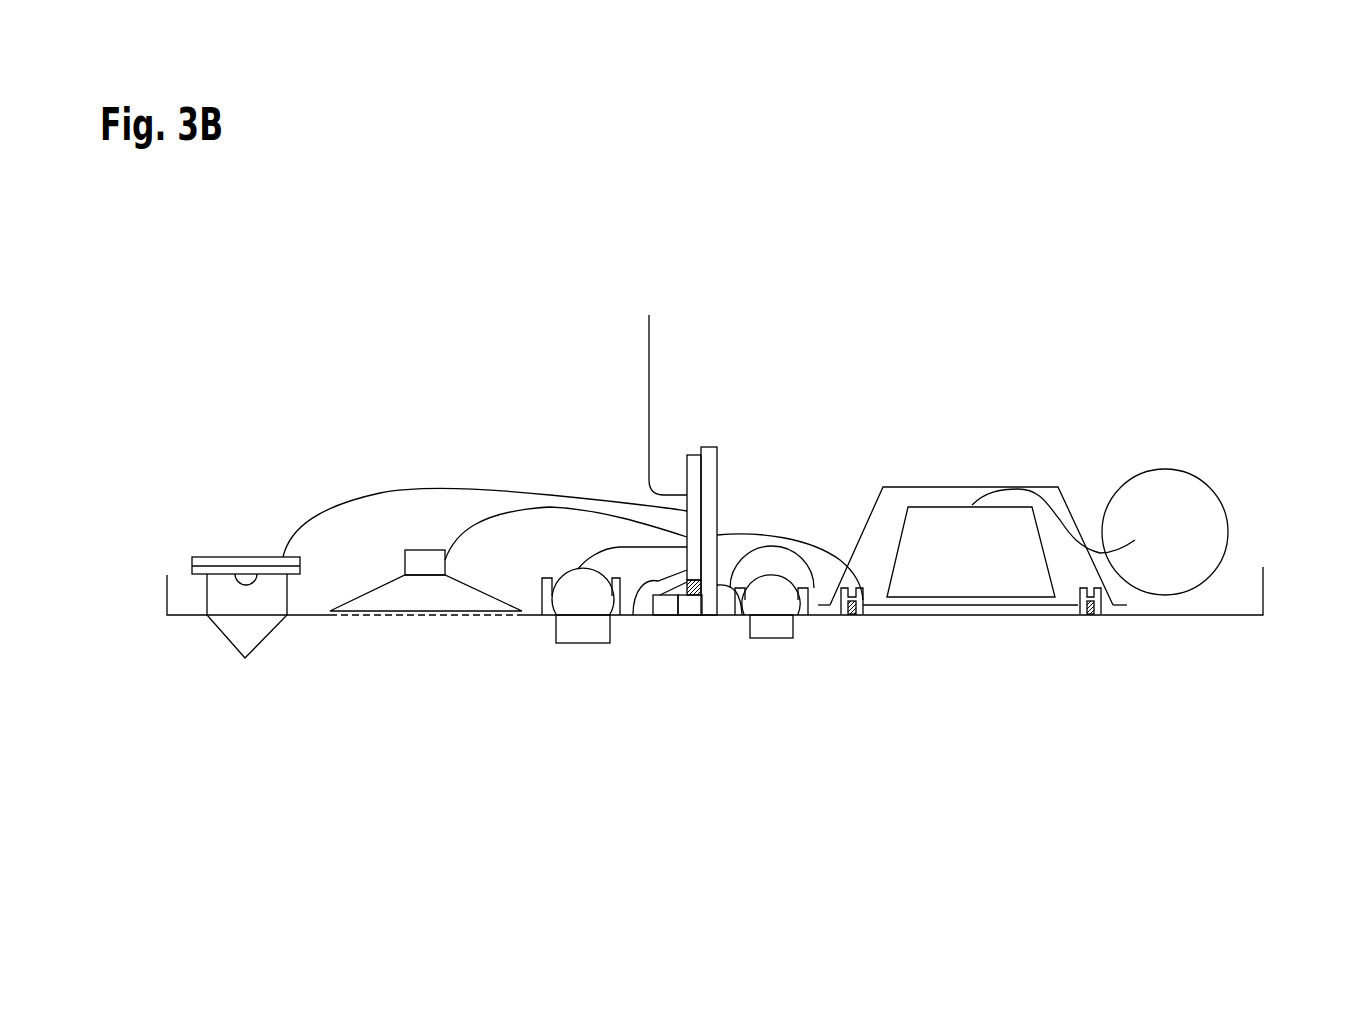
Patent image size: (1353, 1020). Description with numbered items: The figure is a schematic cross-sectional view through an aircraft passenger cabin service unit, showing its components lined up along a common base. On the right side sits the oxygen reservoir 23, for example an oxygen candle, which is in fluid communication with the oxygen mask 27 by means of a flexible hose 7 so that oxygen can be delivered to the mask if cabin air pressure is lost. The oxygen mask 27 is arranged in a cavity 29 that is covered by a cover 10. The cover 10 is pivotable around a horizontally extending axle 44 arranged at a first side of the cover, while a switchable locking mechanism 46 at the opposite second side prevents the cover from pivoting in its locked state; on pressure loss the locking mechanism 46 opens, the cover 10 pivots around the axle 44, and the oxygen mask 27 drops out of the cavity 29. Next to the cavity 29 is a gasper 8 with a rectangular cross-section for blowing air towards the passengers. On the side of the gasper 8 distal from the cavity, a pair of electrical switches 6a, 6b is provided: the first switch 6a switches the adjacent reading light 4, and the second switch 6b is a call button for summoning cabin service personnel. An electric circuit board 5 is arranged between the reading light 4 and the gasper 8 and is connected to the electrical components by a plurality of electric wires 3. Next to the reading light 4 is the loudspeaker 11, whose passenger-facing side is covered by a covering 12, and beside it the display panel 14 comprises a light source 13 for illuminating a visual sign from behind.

The electric wires 3 is at (380, 492).
The reading light 4 is at (587, 688).
The electric circuit board 5 is at (716, 432).
The first switch 6a is at (664, 607).
The second switch 6b is at (688, 607).
The flexible hose 7 is at (1078, 508).
The aircraft passenger cabin gasper 8 is at (772, 688).
The cover 10 is at (967, 615).
The loudspeaker 11 is at (377, 603).
The covering 12 is at (434, 690).
The light source 13 is at (242, 557).
The display panel 14 is at (241, 690).
The oxygen reservoir 23 is at (1228, 475).
The oxygen mask 27 is at (935, 522).
The cavity 29 is at (983, 478).
The axle 44 is at (1090, 615).
The locking mechanism 46 is at (853, 615).